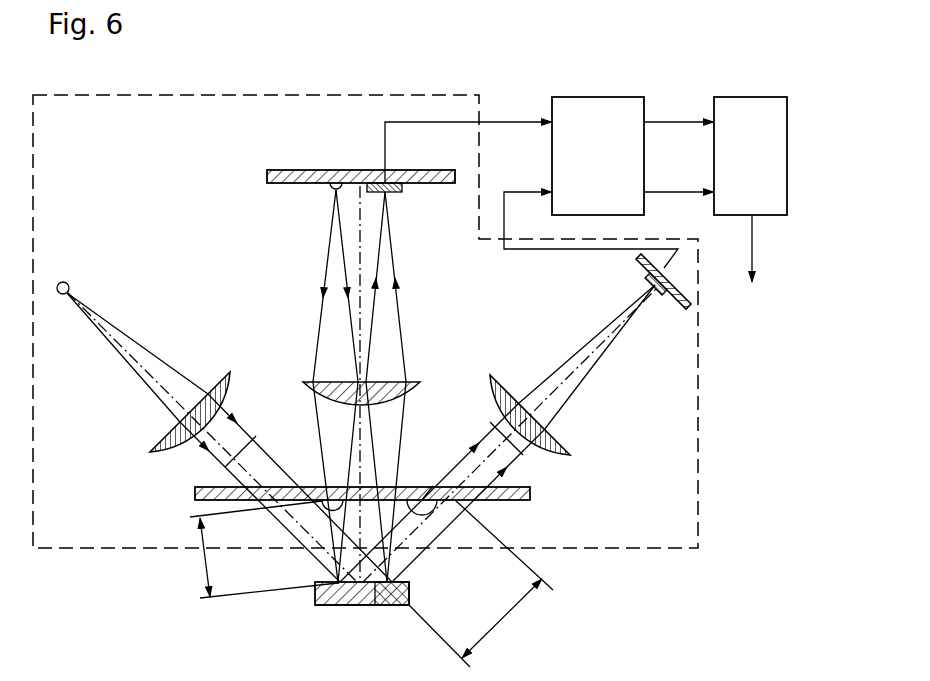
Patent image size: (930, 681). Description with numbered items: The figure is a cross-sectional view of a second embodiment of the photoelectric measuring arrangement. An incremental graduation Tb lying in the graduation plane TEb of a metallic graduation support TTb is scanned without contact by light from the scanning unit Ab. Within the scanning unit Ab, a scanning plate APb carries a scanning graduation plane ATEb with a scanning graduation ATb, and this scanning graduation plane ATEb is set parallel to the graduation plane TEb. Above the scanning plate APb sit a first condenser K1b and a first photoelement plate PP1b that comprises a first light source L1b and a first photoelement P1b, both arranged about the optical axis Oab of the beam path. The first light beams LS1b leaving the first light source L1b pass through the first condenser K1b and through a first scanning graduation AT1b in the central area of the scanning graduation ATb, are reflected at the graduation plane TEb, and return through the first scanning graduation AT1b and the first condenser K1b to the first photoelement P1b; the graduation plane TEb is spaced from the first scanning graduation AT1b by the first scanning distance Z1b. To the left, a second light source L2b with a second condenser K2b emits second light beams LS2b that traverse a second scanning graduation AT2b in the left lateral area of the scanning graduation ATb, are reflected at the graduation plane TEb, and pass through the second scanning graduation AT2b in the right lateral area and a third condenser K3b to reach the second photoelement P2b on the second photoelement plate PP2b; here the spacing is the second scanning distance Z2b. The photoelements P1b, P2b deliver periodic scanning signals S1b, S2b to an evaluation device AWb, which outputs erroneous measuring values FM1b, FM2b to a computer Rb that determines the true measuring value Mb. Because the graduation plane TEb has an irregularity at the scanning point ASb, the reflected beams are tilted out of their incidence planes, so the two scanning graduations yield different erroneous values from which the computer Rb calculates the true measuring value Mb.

The first photoelement plate PP1b is at (325, 170).
The first light source L1b is at (332, 190).
The first photoelement P1b is at (402, 190).
The first periodic scanning signal S1b is at (520, 121).
The second periodic scanning signal S2b is at (520, 191).
The evaluation device AWb is at (634, 173).
The first erroneous measuring value FM1b is at (655, 124).
The second erroneous measuring value FM2b is at (659, 193).
The computer Rb is at (767, 205).
The true measuring value Mb is at (752, 258).
The second photoelement plate PP2b is at (637, 266).
The second photoelement P2b is at (667, 297).
The second light source L2b is at (69, 272).
The first light beams LS1b is at (346, 282).
The second light beams LS2b is at (250, 447).
The first condenser K1b is at (403, 381).
The second condenser K2b is at (214, 392).
The third condenser K3b is at (556, 436).
The optical axis Oab is at (364, 448).
The scanning graduation plane ATEb is at (530, 495).
The first scanning graduation AT1b is at (320, 487).
The second scanning graduation AT2b is at (315, 504).
The scanning graduation ATb is at (414, 526).
The scanning plate APb is at (433, 486).
The first scanning distance Z1b is at (269, 558).
The second scanning distance Z2b is at (475, 623).
The graduation plane TEb is at (407, 582).
The incremental graduation Tb is at (396, 606).
The graduation support TTb is at (355, 598).
The scanning point ASb is at (334, 582).
The scanning unit Ab is at (644, 549).